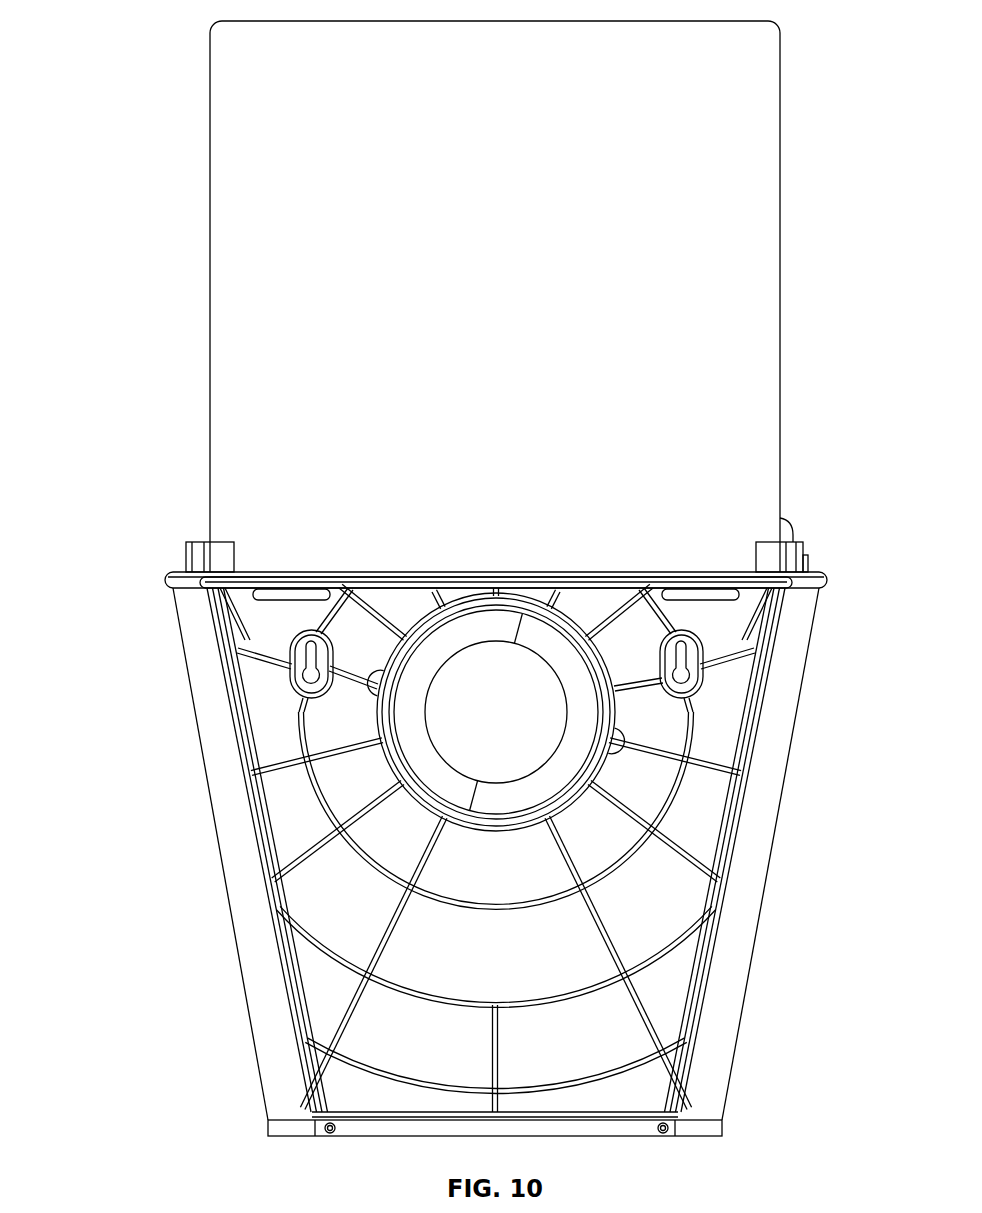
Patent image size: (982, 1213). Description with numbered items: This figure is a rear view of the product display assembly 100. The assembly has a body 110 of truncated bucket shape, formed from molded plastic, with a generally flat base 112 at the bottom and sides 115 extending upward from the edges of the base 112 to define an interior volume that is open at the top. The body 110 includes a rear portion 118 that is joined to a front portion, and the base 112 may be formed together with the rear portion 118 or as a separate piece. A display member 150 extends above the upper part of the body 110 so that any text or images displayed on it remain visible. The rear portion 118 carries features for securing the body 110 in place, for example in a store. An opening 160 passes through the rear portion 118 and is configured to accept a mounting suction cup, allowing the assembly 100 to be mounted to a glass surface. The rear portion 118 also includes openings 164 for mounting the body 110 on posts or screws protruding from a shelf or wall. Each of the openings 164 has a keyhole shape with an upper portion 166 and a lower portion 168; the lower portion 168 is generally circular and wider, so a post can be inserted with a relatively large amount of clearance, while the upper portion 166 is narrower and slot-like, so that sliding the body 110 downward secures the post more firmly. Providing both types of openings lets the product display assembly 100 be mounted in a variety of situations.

The product display assembly 100 is at (133, 282).
The body 110 is at (226, 906).
The base 112 is at (645, 1137).
The sides 115 is at (222, 860).
The rear portion 118 is at (662, 906).
The display member 150 is at (783, 322).
The opening 160 is at (513, 685).
The openings 164 is at (270, 683).
The upper portion 166 is at (294, 650).
The lower portion 168 is at (258, 682).